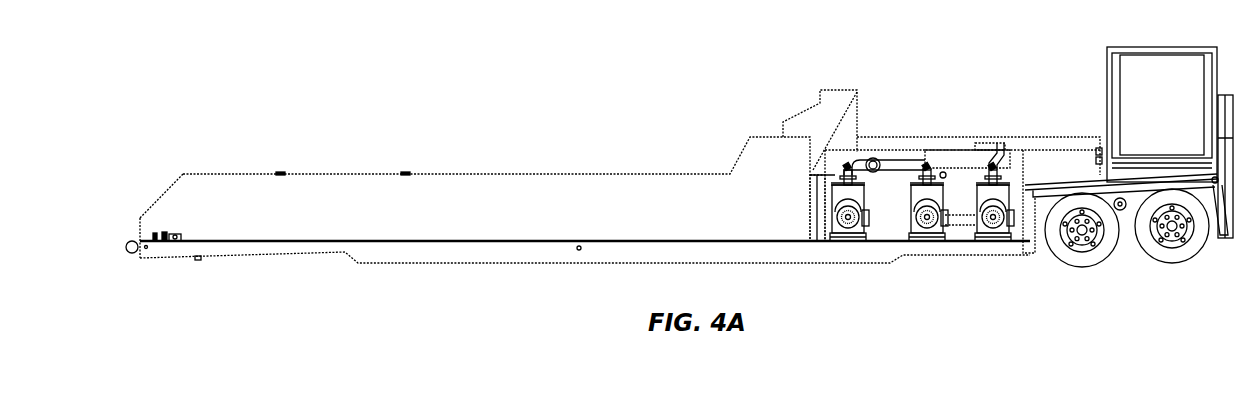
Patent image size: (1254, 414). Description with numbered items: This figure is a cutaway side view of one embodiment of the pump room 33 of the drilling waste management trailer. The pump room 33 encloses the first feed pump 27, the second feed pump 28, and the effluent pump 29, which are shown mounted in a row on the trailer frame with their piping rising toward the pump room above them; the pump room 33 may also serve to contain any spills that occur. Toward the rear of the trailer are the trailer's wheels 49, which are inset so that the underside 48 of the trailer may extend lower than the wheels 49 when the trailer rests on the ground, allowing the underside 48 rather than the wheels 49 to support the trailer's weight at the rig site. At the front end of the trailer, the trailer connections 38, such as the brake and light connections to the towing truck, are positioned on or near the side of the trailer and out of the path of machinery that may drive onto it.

The first feed pump 27 is at (933, 243).
The second feed pump 28 is at (997, 243).
The effluent pump 29 is at (853, 243).
The pump room 33 is at (948, 152).
The trailer connections 38 is at (170, 232).
The underside 48 is at (425, 264).
The wheels 49 is at (1173, 252).